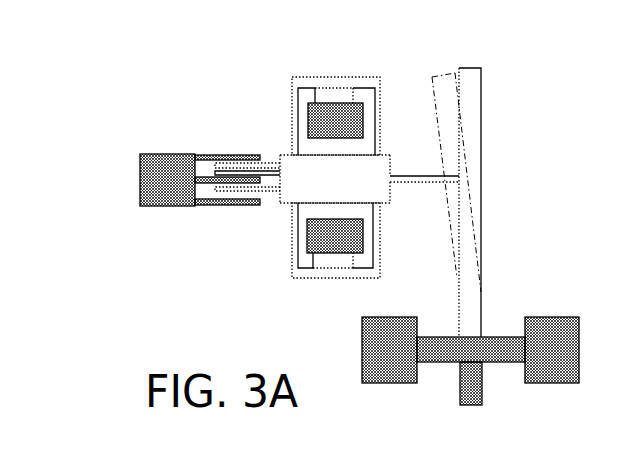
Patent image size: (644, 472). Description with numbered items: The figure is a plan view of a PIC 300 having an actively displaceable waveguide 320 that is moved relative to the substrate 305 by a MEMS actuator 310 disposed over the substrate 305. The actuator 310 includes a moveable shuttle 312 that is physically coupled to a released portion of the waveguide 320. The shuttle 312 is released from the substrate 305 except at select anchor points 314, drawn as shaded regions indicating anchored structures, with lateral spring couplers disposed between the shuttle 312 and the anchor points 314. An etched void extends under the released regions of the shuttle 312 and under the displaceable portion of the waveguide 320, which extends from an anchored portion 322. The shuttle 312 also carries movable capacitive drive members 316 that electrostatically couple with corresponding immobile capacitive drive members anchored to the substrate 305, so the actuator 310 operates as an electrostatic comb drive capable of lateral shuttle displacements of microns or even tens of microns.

The PIC 300 is at (160, 79).
The substrate 305 is at (563, 281).
The MEMS actuator 310 is at (433, 290).
The moveable shuttle 312 is at (431, 187).
The anchor points 314 is at (353, 132).
The movable capacitive drive members 316 is at (268, 149).
The displaceable waveguide 320 is at (488, 108).
The anchored portion 322 is at (407, 360).